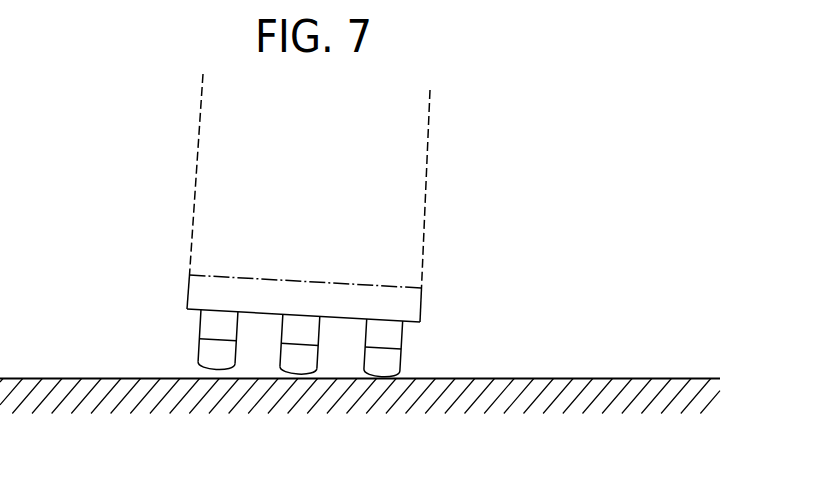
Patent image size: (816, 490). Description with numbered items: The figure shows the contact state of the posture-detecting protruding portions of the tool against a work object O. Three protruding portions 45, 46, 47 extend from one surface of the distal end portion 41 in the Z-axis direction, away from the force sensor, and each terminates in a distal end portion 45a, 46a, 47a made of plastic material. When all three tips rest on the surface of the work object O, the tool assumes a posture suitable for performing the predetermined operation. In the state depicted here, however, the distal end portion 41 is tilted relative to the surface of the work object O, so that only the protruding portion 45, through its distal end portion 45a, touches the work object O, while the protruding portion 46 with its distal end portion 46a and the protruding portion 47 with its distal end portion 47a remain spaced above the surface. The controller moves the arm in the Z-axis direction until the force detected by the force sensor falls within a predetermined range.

The distal end portion 41 is at (427, 152).
The protruding portion 45 is at (449, 348).
The distal end portion of protruding portion 45a is at (403, 362).
The protruding portion 46 is at (148, 340).
The distal end portion of protruding portion 46a is at (201, 325).
The protruding portion 47 is at (290, 353).
The distal end portion of protruding portion 47a is at (278, 355).
The work object O is at (648, 377).